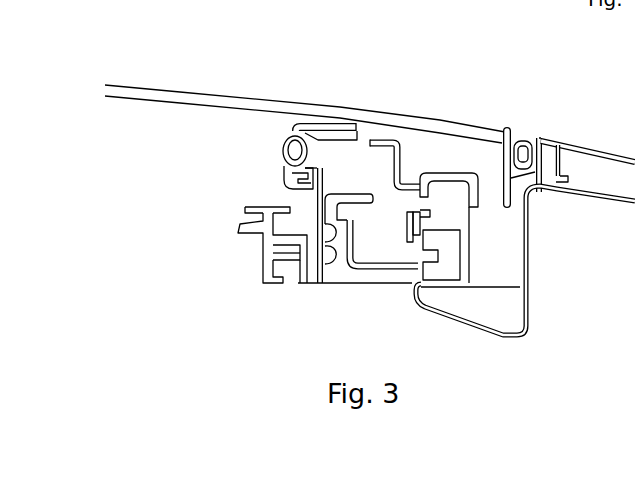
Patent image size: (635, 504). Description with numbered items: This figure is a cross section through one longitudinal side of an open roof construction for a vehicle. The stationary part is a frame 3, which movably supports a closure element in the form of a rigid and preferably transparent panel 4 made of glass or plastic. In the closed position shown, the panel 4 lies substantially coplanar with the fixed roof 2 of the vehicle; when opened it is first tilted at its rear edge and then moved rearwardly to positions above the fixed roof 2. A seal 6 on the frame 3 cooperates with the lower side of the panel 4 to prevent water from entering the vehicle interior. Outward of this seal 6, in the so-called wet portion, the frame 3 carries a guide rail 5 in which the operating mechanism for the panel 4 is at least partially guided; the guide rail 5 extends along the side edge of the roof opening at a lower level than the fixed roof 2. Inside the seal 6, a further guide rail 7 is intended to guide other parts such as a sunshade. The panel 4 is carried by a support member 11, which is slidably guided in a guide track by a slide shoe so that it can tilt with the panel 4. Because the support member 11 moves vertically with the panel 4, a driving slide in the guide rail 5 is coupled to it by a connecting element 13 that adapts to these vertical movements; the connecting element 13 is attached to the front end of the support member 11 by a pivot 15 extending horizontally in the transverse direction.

The fixed roof 2 is at (587, 142).
The frame 3 is at (525, 286).
The panel 4 is at (152, 88).
The guide rail 5 is at (468, 240).
The seal 6 is at (285, 137).
The guide rail 7 is at (273, 229).
The support member 11 is at (446, 172).
The connecting element 13 is at (412, 240).
The pivot 15 is at (405, 223).